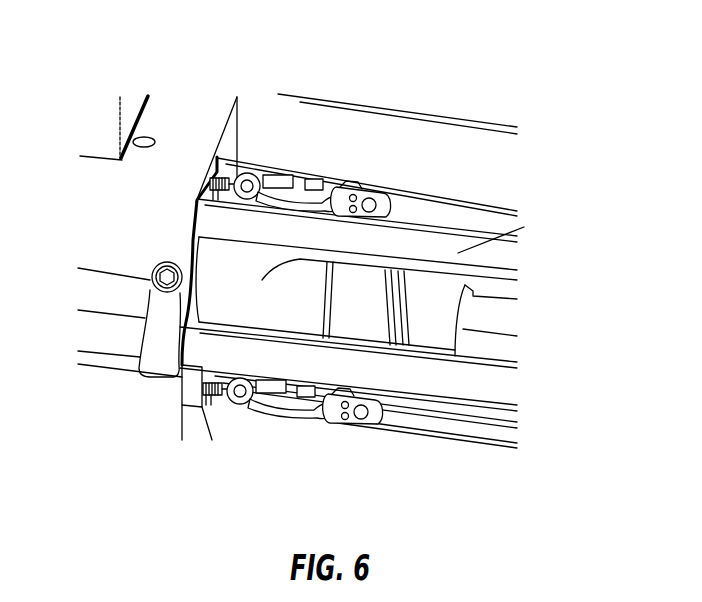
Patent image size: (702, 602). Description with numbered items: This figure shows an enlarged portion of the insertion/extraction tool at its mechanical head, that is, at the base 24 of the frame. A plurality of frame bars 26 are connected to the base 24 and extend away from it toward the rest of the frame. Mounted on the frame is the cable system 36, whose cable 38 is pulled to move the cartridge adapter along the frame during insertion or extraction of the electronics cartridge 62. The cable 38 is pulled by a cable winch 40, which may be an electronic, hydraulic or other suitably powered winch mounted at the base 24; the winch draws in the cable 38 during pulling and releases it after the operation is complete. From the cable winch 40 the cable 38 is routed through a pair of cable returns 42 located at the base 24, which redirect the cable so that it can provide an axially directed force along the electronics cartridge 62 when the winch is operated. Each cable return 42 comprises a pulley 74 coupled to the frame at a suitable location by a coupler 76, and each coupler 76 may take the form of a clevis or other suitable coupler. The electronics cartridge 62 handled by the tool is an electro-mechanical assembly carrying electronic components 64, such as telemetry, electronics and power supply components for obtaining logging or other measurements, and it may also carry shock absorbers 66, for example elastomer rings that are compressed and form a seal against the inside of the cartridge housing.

The base 24 is at (130, 402).
The frame bars 26 is at (497, 236).
The cable system 36 is at (338, 172).
The cable 38 is at (498, 207).
The cable winch 40 is at (135, 96).
The cable returns 42 is at (361, 186).
The electronics cartridge 62 is at (522, 359).
The electronic components 64 is at (468, 264).
The shock absorbers 66 is at (388, 340).
The pulleys 74 is at (378, 418).
The couplers 76 is at (283, 173).